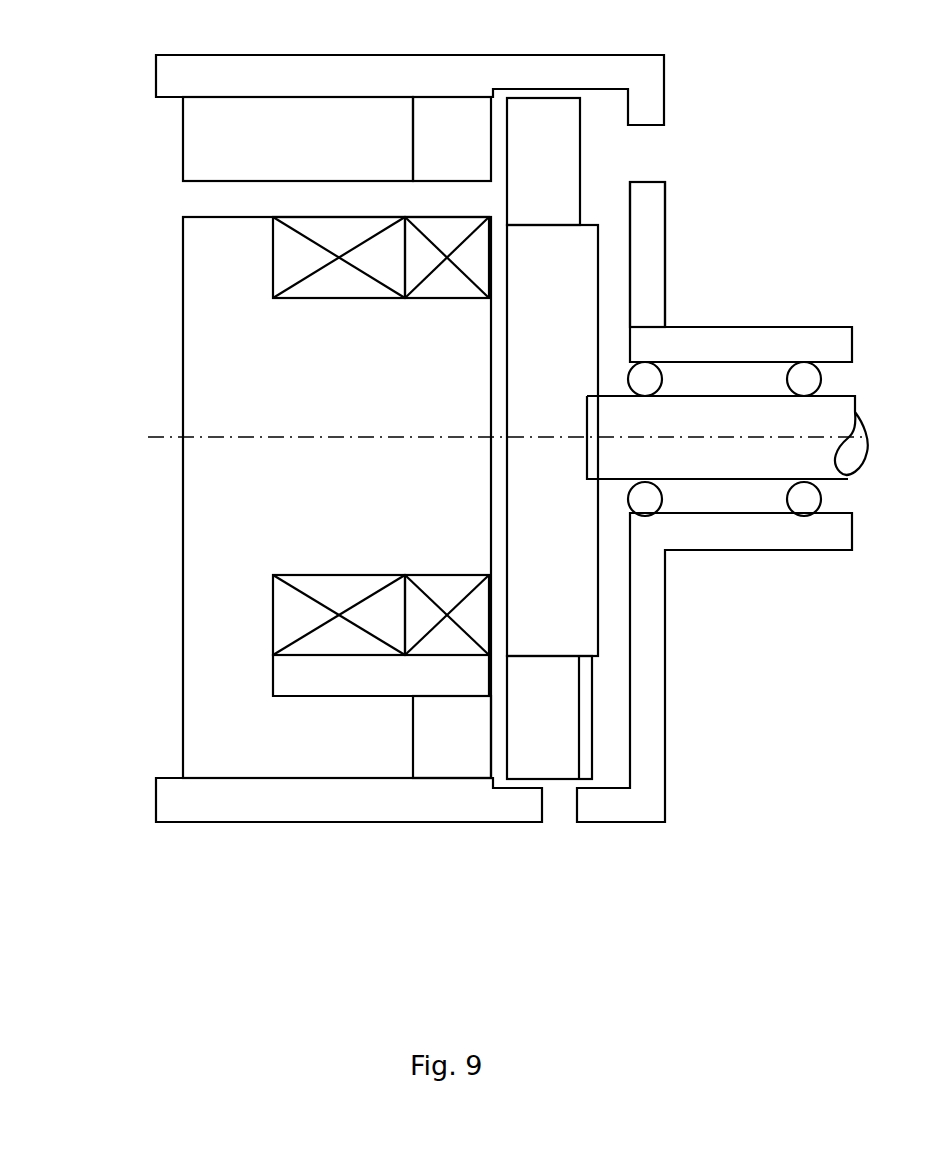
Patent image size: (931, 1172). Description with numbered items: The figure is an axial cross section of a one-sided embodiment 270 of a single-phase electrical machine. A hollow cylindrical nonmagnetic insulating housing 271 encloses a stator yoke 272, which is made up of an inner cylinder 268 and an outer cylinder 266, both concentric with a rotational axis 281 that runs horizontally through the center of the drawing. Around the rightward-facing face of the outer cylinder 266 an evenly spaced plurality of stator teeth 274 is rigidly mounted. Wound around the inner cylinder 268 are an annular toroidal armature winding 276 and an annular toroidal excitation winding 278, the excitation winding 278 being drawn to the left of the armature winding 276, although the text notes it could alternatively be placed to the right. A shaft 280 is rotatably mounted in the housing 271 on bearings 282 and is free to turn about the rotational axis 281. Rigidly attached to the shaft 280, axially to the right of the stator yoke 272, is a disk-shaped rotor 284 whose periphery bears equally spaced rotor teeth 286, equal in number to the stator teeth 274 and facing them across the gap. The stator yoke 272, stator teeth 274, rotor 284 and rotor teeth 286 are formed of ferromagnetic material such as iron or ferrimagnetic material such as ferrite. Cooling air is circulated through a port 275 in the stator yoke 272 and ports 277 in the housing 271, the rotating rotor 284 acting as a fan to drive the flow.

The one-sided embodiment 270 is at (160, 873).
The housing 271 is at (428, 88).
The stator yoke 272 is at (202, 335).
The stator teeth 274 is at (471, 154).
The port 275 is at (213, 200).
The armature winding 276 is at (447, 438).
The ports 277 is at (664, 167).
The excitation winding 278 is at (339, 438).
The shaft 280 is at (727, 437).
The rotational axis 281 is at (160, 435).
The bearings 282 is at (806, 377).
The rotor 284 is at (576, 347).
The rotor teeth 286 is at (566, 174).
The outer cylinder 266 is at (313, 159).
The inner cylinder 268 is at (354, 387).